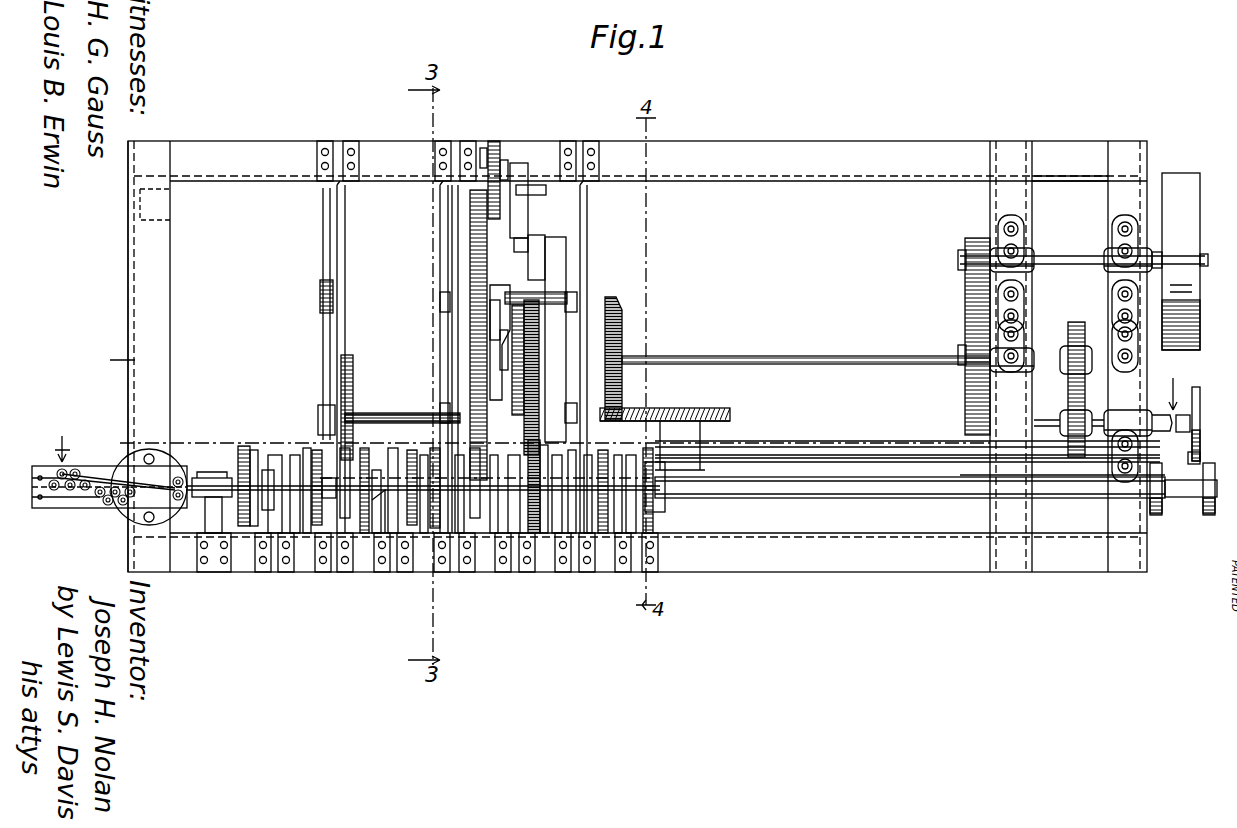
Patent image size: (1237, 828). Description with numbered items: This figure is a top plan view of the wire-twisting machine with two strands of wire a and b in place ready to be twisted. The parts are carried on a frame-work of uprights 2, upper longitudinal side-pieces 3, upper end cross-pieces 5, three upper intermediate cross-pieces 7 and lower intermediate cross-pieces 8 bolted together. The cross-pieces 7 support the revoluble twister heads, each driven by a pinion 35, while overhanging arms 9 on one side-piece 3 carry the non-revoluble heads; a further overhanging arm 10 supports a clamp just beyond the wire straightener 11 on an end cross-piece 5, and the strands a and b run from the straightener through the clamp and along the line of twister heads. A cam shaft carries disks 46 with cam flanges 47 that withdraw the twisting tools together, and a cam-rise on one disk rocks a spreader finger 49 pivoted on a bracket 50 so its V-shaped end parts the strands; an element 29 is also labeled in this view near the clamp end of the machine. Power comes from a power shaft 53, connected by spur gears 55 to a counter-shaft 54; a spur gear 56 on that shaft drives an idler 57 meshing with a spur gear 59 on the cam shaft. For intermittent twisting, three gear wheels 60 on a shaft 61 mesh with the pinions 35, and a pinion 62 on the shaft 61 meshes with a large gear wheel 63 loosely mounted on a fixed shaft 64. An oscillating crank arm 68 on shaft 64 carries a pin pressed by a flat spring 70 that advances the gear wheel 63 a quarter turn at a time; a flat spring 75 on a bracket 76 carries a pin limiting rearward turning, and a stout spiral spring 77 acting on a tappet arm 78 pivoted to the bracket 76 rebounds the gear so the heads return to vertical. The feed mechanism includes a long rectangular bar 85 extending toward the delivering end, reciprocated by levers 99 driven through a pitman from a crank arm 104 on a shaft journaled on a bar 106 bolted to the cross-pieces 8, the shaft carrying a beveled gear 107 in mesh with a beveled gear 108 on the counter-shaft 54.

The uprights 2 is at (617, 425).
The upper longitudinal side-pieces 3 is at (855, 565).
The upper end cross-pieces 5 is at (113, 356).
The upper intermediate cross-pieces 7 is at (323, 258).
The lower intermediate cross-pieces 8 is at (1022, 215).
The overhanging arms 9 is at (290, 540).
The overhanging arm 10 is at (215, 535).
The wire straightener 11 is at (115, 450).
The gear 29 is at (248, 448).
The pinion 35 is at (413, 483).
The disks 46 is at (312, 460).
The cam flanges 47 is at (303, 455).
The finger 49 is at (375, 540).
The bracket 50 is at (362, 525).
The power shaft 53 is at (1068, 252).
The counter-shaft 54 is at (822, 357).
The spur gears 55 is at (964, 345).
The spur gear 56 is at (535, 318).
The idler 57 is at (537, 375).
The spur gear 59 is at (538, 540).
The gear wheels 60 is at (353, 392).
The shaft 61 is at (398, 415).
The pinion 62 is at (480, 395).
The large gear wheel 63 is at (482, 300).
The shaft 64 is at (550, 290).
The oscillating crank arm 68 is at (500, 325).
The flat spring 70 is at (505, 345).
The flat spring 75 is at (515, 165).
The bracket 76 is at (505, 165).
The spiral spring 77 is at (483, 150).
The tappet arm 78 is at (495, 145).
The rectangular bar 85 is at (800, 502).
The levers 99 is at (934, 502).
The crank arm 104 is at (727, 502).
The bar 106 is at (907, 443).
The beveled gear 107 is at (698, 408).
The beveled gear 108 is at (623, 320).
The strand of wire a is at (150, 490).
The strand of wire b is at (128, 508).